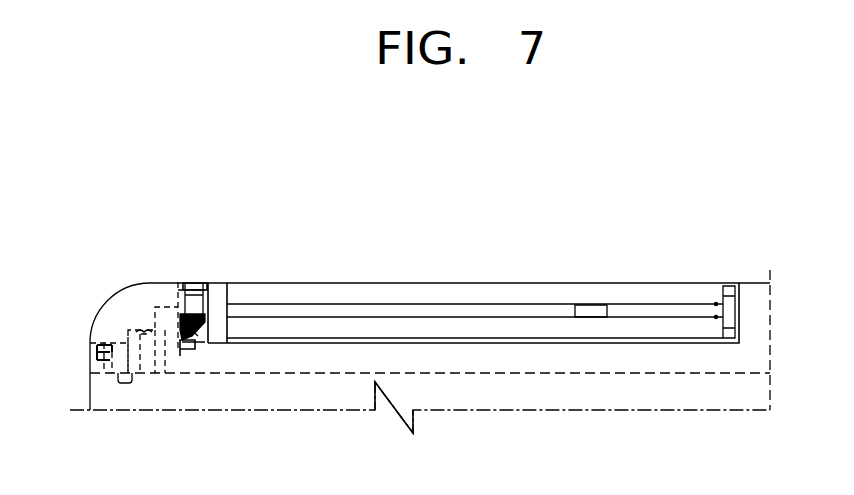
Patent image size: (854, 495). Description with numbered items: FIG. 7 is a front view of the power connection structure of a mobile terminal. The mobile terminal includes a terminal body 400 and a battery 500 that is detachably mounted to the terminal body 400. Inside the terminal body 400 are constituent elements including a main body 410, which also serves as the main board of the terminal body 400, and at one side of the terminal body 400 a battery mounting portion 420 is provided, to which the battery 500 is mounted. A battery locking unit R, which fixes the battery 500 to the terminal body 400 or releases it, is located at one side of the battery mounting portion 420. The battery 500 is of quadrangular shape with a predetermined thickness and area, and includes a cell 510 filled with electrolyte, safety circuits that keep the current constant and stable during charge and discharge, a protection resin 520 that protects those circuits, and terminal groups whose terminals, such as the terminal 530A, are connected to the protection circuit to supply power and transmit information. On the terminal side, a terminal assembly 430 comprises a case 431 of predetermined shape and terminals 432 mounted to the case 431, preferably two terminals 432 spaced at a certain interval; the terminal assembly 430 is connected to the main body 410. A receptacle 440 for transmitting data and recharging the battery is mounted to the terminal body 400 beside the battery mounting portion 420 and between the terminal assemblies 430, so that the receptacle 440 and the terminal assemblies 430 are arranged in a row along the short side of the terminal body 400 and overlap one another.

The terminal body 400 is at (113, 288).
The receptacle 440 is at (120, 338).
The terminal assembly 430 is at (158, 305).
The case 431 is at (165, 365).
The terminal 432 is at (182, 290).
The protection resin 520 is at (205, 285).
The terminal 530A is at (197, 343).
The cell 510 is at (374, 292).
The battery mounting portion 420 is at (450, 345).
The battery 500 is at (533, 283).
The main body 410 is at (647, 373).
The battery locking unit R is at (735, 287).